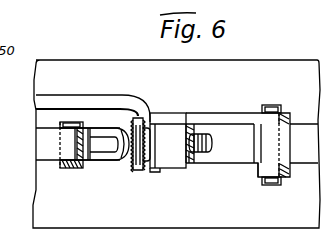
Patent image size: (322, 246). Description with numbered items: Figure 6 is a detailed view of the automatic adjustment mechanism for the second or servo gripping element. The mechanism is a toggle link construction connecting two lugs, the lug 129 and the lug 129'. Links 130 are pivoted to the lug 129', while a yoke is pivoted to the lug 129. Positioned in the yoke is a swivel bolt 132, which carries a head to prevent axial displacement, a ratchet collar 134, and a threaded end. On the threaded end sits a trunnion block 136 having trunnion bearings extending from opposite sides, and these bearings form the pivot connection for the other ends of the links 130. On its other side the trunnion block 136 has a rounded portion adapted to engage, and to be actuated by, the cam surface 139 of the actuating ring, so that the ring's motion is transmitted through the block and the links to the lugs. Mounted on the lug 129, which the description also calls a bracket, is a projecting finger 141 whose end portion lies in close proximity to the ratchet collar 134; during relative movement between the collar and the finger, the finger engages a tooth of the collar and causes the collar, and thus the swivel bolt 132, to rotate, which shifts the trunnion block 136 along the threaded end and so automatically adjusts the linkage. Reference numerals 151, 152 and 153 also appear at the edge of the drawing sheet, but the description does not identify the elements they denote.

The lug 129 is at (78, 165).
The lug 129' is at (287, 124).
The links 130 is at (243, 118).
The swivel bolt 132 is at (203, 152).
The ratchet collar 134 is at (140, 170).
The trunnion block 136 is at (164, 135).
The cam surface 139 is at (100, 158).
The projecting finger 141 is at (110, 95).
The adjacent figure element 151 is at (8, 109).
The adjacent figure element 152 is at (10, 152).
The adjacent figure element 153 is at (10, 81).